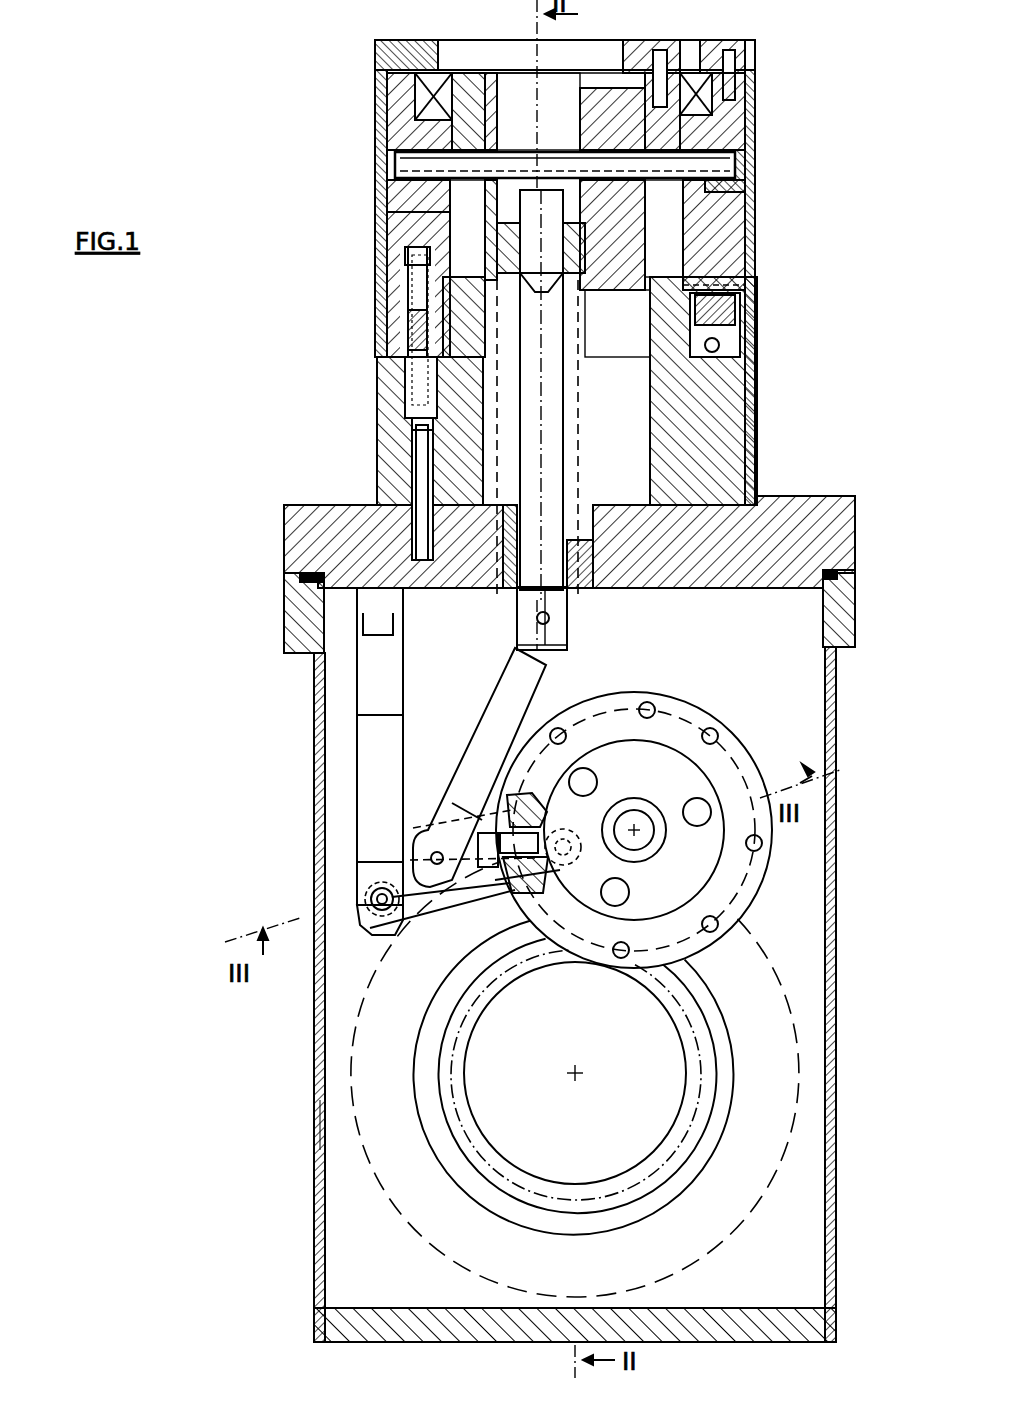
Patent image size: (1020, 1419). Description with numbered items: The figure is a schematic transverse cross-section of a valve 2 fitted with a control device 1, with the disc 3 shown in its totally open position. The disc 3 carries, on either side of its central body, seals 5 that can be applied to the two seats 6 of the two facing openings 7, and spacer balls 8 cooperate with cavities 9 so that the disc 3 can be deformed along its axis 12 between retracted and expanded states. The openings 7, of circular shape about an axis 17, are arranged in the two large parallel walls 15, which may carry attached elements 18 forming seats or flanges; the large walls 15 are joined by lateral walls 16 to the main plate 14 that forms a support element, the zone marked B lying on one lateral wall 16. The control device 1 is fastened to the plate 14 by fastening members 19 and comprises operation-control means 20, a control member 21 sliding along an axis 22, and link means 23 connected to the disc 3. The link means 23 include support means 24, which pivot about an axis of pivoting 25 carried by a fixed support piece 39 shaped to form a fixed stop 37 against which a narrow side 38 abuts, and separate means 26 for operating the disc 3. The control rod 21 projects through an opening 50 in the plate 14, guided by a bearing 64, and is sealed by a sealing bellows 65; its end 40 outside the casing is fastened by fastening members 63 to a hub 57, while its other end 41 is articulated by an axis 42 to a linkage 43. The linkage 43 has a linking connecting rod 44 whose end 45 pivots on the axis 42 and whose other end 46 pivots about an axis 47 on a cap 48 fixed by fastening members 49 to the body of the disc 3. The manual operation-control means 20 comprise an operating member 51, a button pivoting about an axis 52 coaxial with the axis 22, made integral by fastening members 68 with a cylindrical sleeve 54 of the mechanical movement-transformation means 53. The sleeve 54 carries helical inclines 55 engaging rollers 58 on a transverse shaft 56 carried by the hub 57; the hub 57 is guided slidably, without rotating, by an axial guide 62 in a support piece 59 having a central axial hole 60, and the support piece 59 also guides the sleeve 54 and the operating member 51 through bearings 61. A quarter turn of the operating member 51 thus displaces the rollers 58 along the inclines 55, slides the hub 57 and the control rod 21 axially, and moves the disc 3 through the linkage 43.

The control device 1 is at (455, 470).
The valve 2 is at (770, 560).
The disc 3 is at (722, 740).
The seals 5 is at (683, 765).
The seats 6 is at (690, 1045).
The openings 7 is at (575, 1073).
The spacer balls 8 is at (647, 702).
The cavities 9 is at (634, 736).
The axis 12 is at (636, 828).
The main plate 14 is at (845, 520).
The large parallel walls 15 is at (575, 946).
The lateral walls 16 is at (838, 912).
The axis 17 is at (572, 1078).
The attached elements 18 is at (700, 1088).
The fastening members 19 is at (420, 470).
The operation-control means 20 is at (495, 282).
The control member 21 is at (570, 600).
The axis 22 is at (565, 440).
The link means 23 is at (456, 783).
The support means 24 is at (440, 918).
The axis of pivoting 25 is at (370, 896).
The means for operating the disc 26 is at (513, 698).
The fixed stop 37 is at (395, 935).
The narrow side 38 is at (445, 895).
The support piece 39 is at (370, 745).
The end 40 is at (580, 290).
The other end 41 is at (570, 640).
The axis 42 is at (535, 620).
The linkage 43 is at (510, 718).
The linking connecting rod 44 is at (480, 740).
The end 45 is at (565, 662).
The other end 46 is at (440, 822).
The axis 47 is at (431, 856).
The cap 48 is at (488, 868).
The fastening members 49 is at (520, 870).
The opening 50 is at (476, 588).
The operating member 51 is at (755, 108).
The axis 52 is at (545, 118).
The mechanical movement-transformation means 53 is at (690, 240).
The cylindrical sleeve 54 is at (730, 215).
The helical inclines 55 is at (745, 195).
The transverse shaft 56 is at (755, 148).
The hub 57 is at (620, 110).
The rollers 58 is at (748, 178).
The support piece 59 is at (720, 395).
The central axial hole 60 is at (740, 322).
The bearings 61 is at (375, 95).
The axial guide 62 is at (470, 72).
The fastening members 63 is at (440, 218).
The bearing 64 is at (437, 588).
The sealing member 65 is at (445, 372).
The fastening members 68 is at (755, 78).
The wall section B is at (313, 1118).